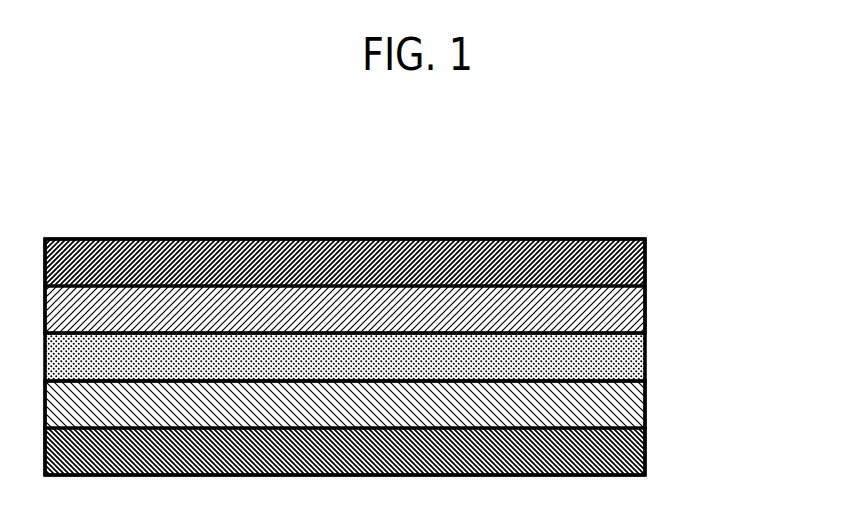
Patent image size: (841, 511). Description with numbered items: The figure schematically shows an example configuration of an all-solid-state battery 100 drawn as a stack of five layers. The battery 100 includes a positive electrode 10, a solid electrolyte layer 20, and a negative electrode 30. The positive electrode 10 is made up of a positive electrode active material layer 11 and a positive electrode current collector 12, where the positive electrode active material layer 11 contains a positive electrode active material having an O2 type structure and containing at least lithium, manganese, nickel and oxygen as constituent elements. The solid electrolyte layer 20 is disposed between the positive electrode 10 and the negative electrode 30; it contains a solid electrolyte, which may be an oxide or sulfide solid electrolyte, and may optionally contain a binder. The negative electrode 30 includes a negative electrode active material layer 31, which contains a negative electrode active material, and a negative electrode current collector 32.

The all-solid-state battery 100 is at (357, 195).
The positive electrode 10 is at (775, 240).
The positive electrode active material layer 11 is at (647, 306).
The positive electrode current collector 12 is at (647, 258).
The solid electrolyte layer 20 is at (647, 357).
The negative electrode 30 is at (775, 385).
The negative electrode active material layer 31 is at (647, 399).
The negative electrode current collector 32 is at (647, 448).